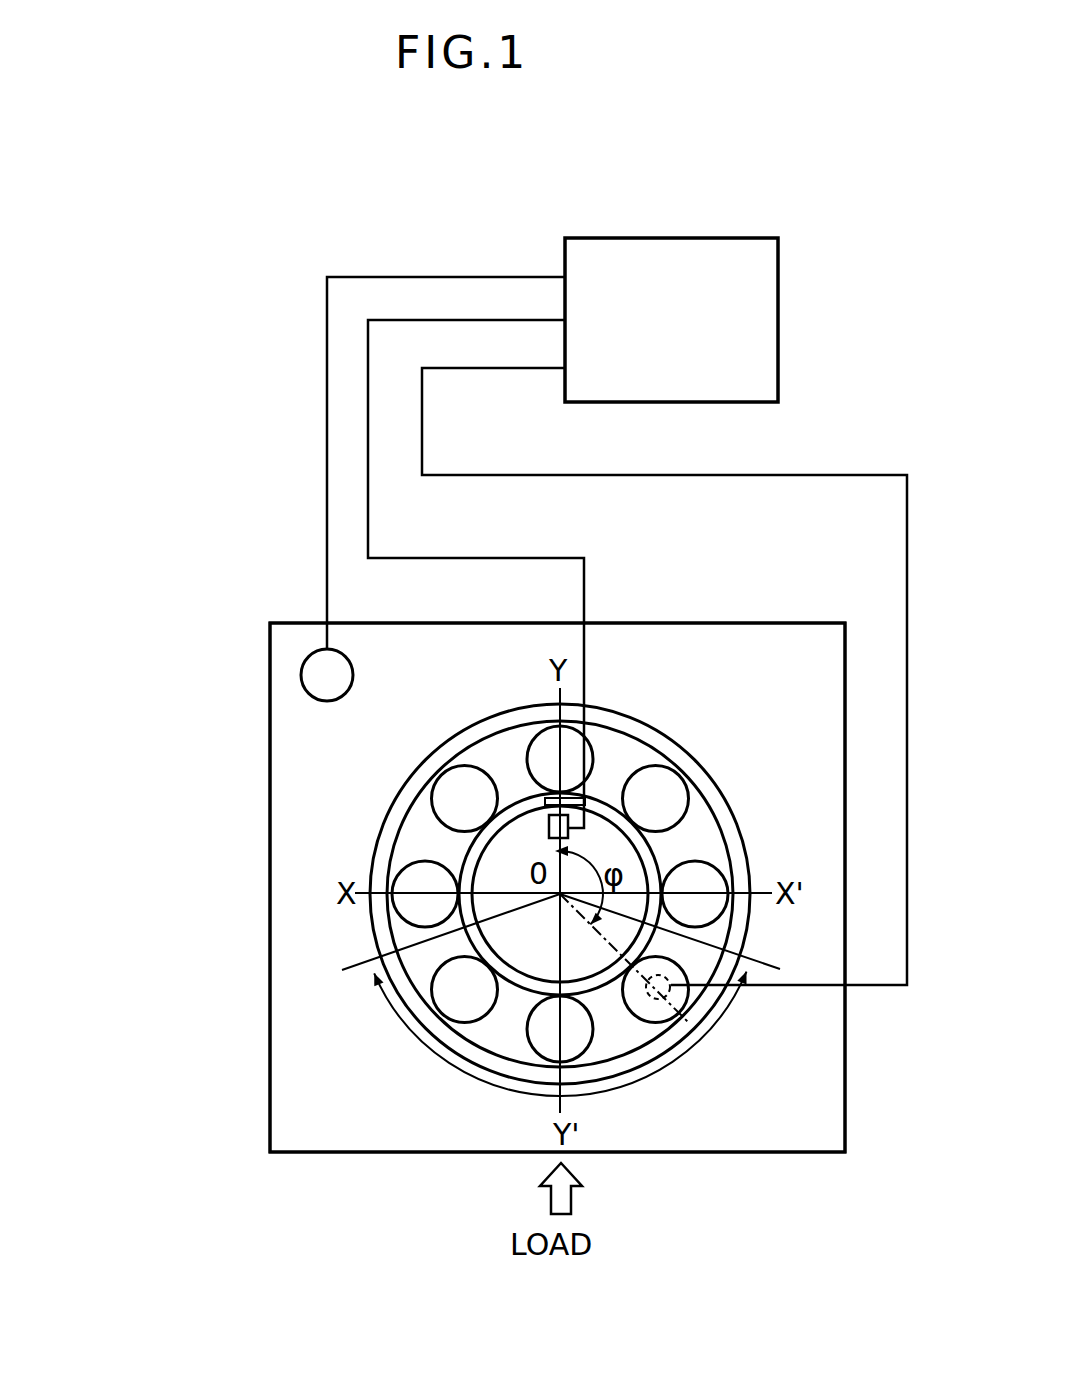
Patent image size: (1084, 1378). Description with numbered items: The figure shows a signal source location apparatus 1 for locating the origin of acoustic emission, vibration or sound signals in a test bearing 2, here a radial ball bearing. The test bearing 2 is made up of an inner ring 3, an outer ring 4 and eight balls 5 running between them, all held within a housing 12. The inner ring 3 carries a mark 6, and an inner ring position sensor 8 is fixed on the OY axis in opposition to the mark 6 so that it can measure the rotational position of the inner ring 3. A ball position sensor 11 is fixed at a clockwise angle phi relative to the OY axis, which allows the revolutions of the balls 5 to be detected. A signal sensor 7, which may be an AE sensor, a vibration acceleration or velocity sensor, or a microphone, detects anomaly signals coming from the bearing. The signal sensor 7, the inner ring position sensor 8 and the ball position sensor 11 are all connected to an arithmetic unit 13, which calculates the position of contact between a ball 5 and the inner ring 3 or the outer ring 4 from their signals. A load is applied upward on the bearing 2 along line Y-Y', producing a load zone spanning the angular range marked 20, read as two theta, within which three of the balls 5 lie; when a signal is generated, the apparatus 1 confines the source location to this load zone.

The signal source location apparatus 1 is at (245, 714).
The test bearing 2 is at (740, 826).
The inner ring 3 is at (522, 982).
The outer ring 4 is at (392, 791).
The balls 5 is at (443, 814).
The mark 6 is at (532, 793).
The signal sensor 7 is at (312, 670).
The inner ring position sensor 8 is at (543, 799).
The ball position sensor 11 is at (647, 1000).
The housing 12 is at (270, 1090).
The arithmetic unit 13 is at (725, 237).
The load zone angle 20 is at (700, 1040).